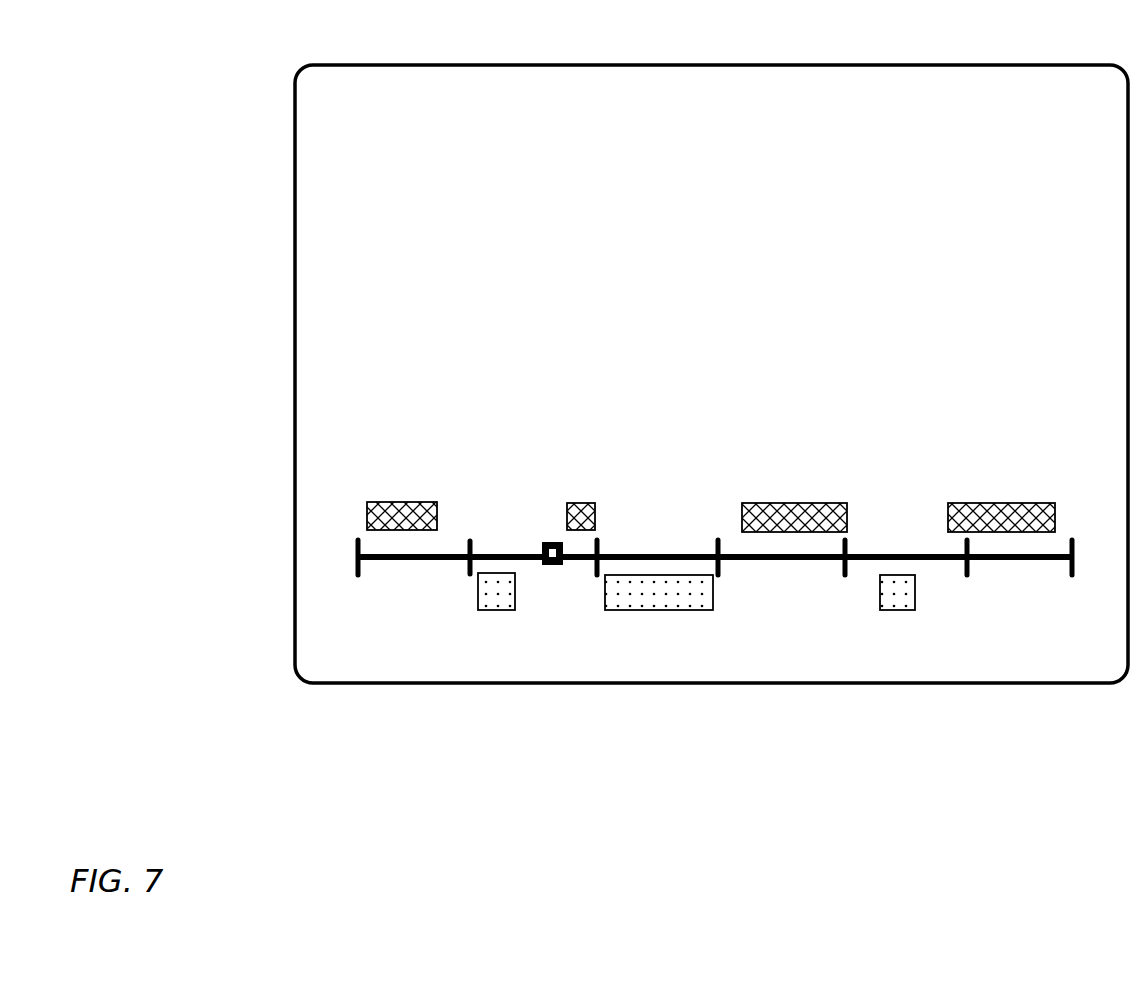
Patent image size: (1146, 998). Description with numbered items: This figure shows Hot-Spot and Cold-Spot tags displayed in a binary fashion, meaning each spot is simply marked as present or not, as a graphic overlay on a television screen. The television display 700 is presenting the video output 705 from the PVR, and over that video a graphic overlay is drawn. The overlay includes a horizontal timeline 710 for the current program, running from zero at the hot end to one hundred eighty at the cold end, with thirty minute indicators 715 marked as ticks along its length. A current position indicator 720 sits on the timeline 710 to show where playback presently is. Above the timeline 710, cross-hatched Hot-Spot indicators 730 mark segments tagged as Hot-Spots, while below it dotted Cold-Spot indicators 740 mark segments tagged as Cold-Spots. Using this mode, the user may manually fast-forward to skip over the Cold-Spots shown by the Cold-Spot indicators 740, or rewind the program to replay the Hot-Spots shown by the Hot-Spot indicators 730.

The television display 700 is at (430, 64).
The video output 705 is at (543, 93).
The timeline 710 is at (368, 561).
The thirty minute indicators 715 is at (845, 578).
The current position indicator 720 is at (558, 578).
The Hot-Spot indicators 730 is at (367, 519).
The Cold-Spot indicators 740 is at (672, 607).